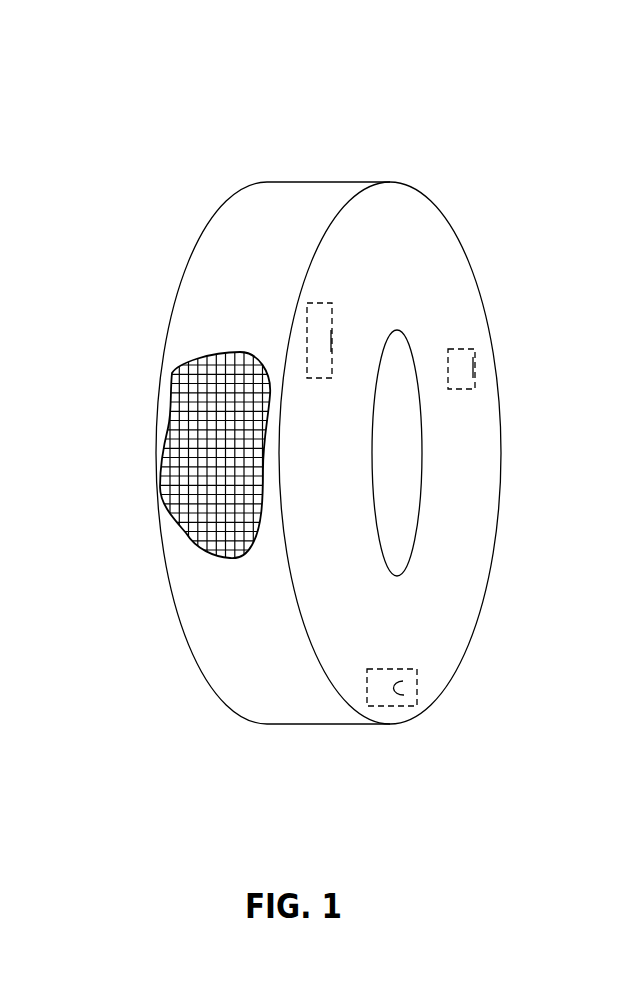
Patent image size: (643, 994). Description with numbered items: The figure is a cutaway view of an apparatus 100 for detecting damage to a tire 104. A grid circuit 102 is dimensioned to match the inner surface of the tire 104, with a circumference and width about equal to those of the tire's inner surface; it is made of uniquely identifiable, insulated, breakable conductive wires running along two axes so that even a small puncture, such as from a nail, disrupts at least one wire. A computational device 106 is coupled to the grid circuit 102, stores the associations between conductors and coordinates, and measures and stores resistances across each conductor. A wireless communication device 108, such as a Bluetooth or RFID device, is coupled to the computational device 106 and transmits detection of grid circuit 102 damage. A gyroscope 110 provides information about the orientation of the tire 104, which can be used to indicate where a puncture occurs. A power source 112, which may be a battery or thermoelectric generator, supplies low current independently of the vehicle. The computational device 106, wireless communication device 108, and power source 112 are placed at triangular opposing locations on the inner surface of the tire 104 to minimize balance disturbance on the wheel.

The apparatus 100 is at (322, 91).
The grid circuit 102 is at (183, 523).
The tire 104 is at (472, 573).
The computational device 106 is at (378, 690).
The wireless communication device 108 is at (402, 693).
The gyroscope 110 is at (460, 372).
The power source 112 is at (317, 338).